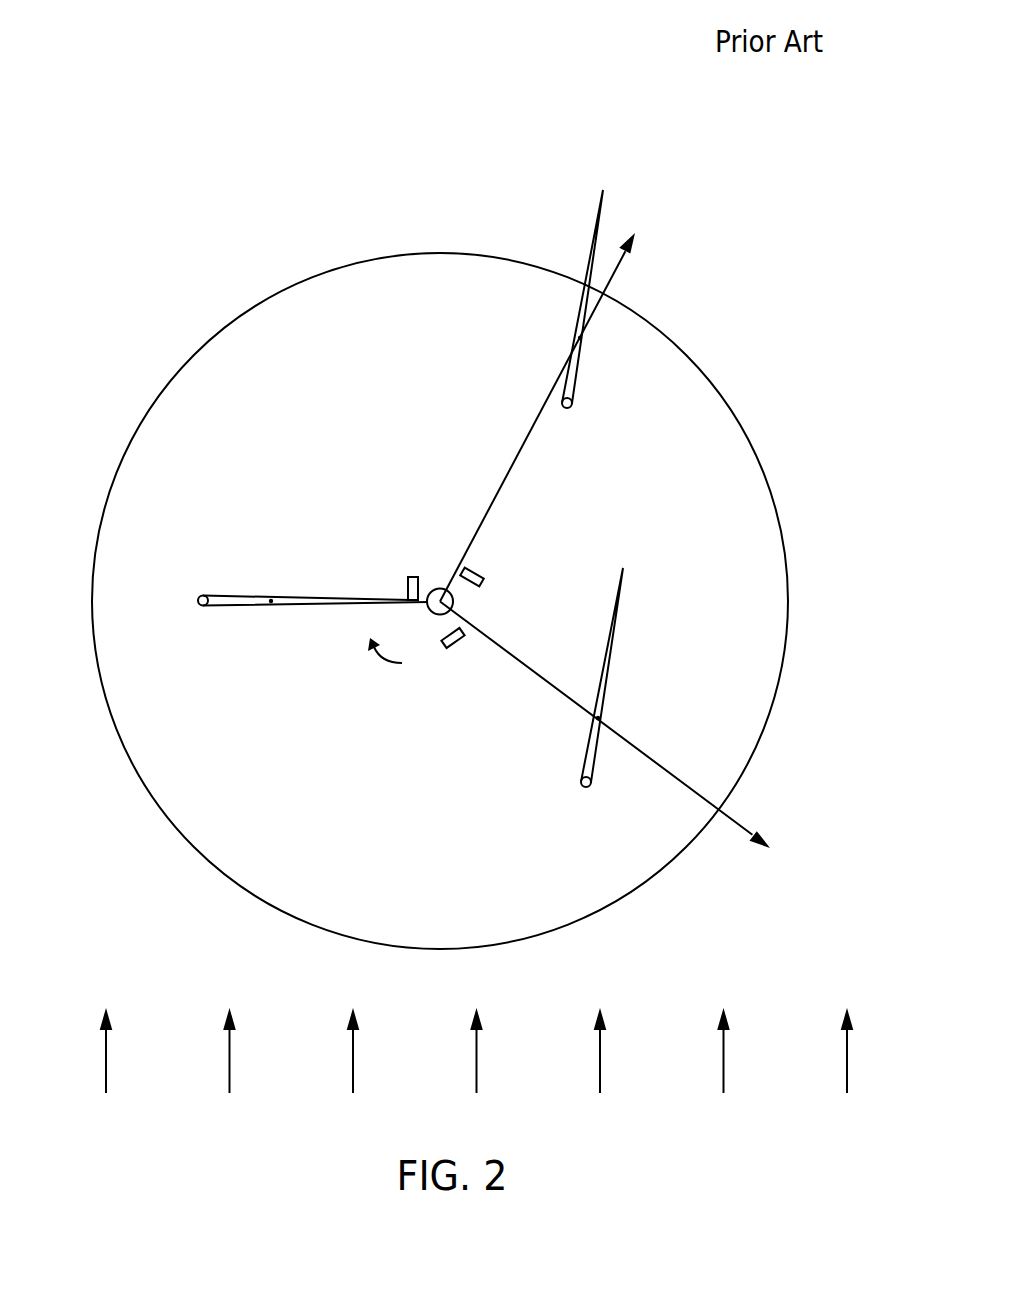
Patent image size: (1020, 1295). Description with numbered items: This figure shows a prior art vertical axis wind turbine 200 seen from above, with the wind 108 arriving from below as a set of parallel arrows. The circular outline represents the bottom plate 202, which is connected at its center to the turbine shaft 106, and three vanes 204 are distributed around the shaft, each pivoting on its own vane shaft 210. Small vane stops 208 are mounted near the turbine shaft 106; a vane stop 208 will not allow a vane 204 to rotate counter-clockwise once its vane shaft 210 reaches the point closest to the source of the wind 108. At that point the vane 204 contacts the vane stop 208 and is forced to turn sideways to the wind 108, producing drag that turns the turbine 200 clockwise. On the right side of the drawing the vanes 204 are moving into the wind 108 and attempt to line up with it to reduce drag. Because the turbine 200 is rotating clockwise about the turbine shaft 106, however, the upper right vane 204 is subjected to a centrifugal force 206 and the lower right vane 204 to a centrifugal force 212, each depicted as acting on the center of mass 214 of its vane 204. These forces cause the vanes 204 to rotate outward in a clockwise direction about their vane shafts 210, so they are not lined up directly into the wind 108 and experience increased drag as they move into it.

The vertical axis wind turbine 200 is at (128, 234).
The bottom plate 202 is at (342, 266).
The vane 204 is at (592, 243).
The centrifugal force 206 is at (623, 257).
The vane stop 208 is at (408, 582).
The vane shaft 210 is at (567, 410).
The centrifugal force 212 is at (750, 827).
The center of mass 214 is at (582, 340).
The turbine shaft 106 is at (454, 603).
The wind 108 is at (724, 1072).